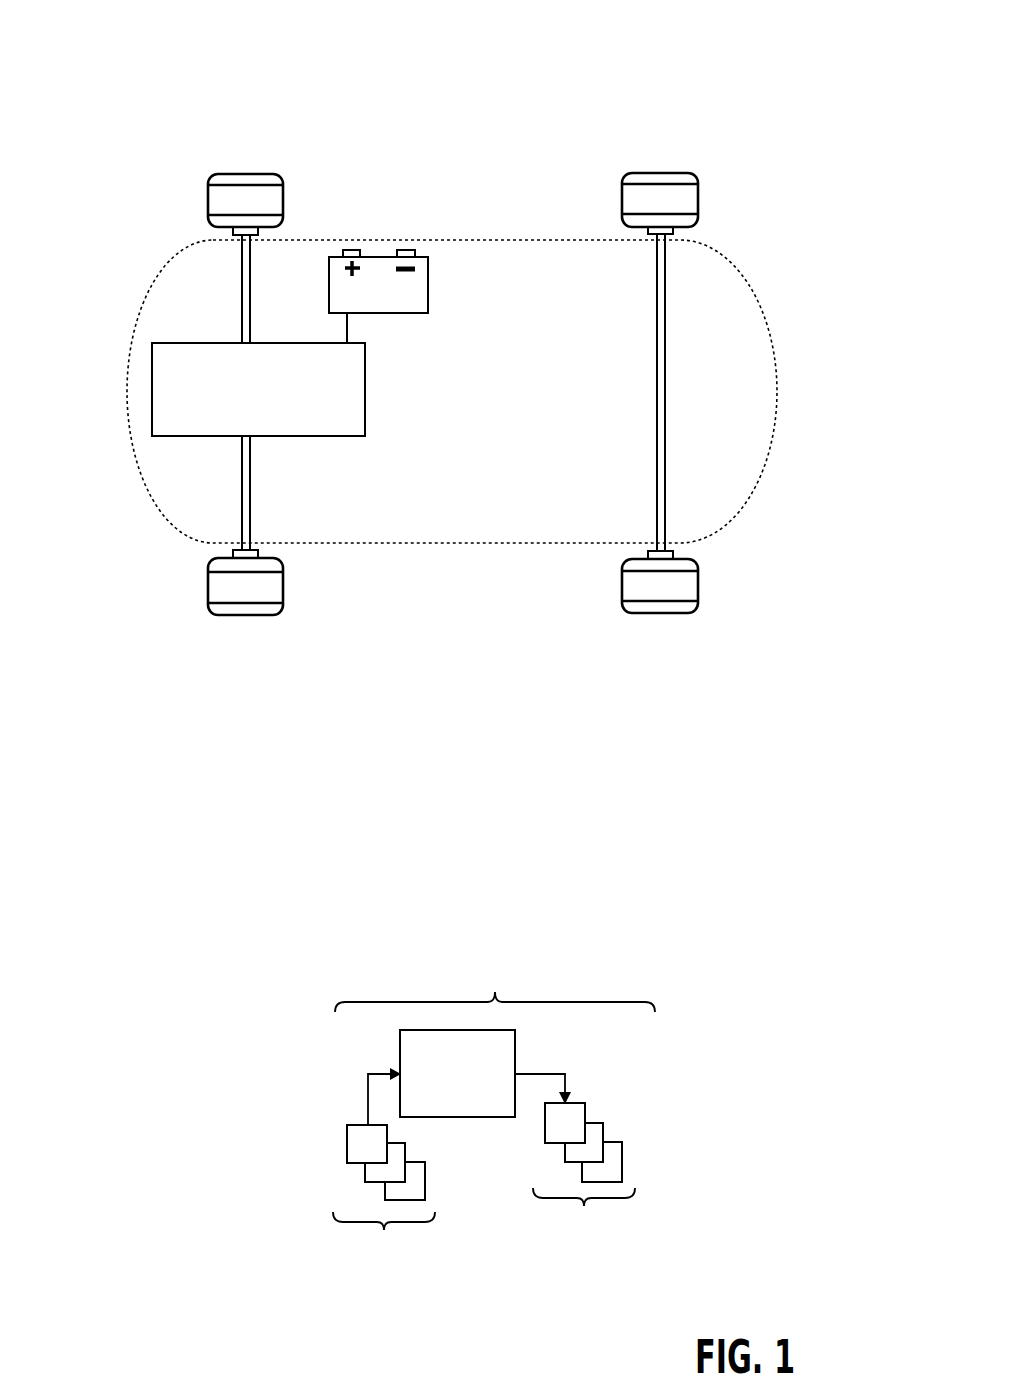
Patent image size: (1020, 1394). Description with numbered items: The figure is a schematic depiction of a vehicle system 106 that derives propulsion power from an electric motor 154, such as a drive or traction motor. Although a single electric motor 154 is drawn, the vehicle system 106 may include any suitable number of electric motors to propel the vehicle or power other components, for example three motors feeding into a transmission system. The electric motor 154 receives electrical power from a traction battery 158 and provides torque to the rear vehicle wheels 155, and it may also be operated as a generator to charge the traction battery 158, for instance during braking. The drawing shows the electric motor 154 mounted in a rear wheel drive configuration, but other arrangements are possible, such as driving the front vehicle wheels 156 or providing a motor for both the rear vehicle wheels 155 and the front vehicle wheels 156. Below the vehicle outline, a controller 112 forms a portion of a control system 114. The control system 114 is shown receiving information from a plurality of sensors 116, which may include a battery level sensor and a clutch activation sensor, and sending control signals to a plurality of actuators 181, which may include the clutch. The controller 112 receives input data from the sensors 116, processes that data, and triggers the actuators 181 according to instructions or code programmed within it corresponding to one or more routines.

The vehicle system 106 is at (787, 78).
The electric motor 154 is at (173, 437).
The rear vehicle wheels 155 is at (240, 617).
The front vehicle wheels 156 is at (657, 615).
The traction battery 158 is at (350, 252).
The control system 114 is at (494, 1105).
The controller 112 is at (457, 1073).
The sensors 116 is at (384, 1203).
The actuators 181 is at (584, 1181).